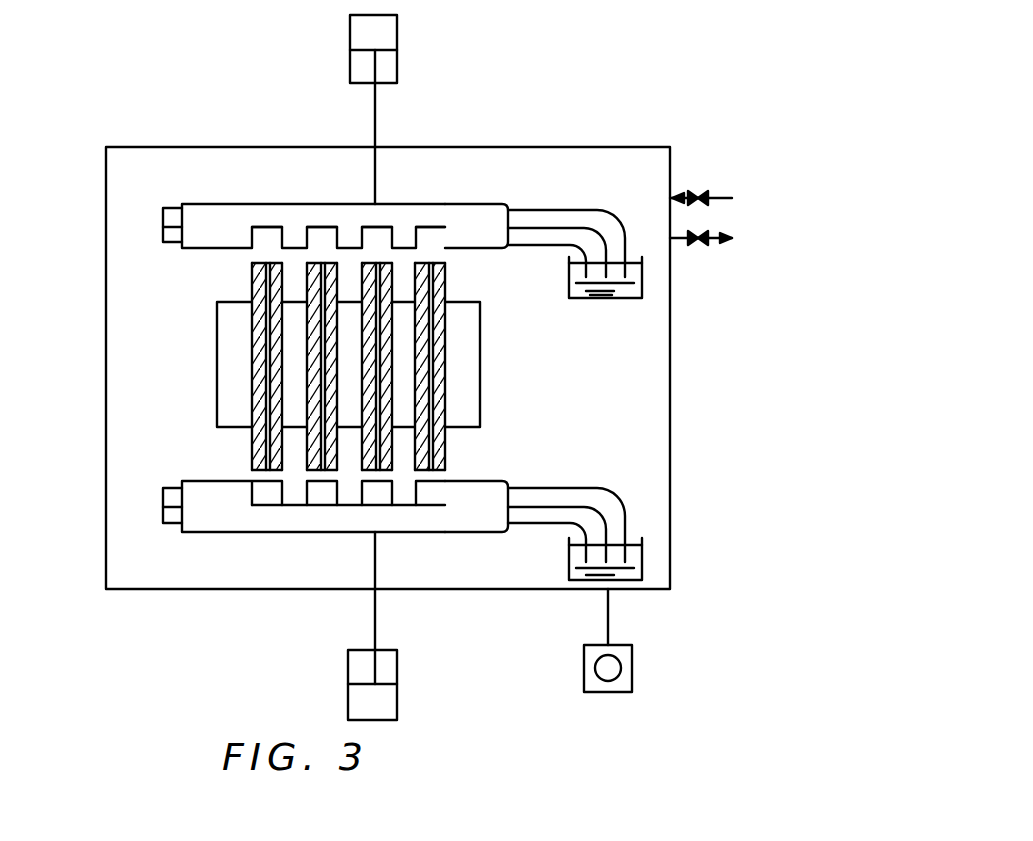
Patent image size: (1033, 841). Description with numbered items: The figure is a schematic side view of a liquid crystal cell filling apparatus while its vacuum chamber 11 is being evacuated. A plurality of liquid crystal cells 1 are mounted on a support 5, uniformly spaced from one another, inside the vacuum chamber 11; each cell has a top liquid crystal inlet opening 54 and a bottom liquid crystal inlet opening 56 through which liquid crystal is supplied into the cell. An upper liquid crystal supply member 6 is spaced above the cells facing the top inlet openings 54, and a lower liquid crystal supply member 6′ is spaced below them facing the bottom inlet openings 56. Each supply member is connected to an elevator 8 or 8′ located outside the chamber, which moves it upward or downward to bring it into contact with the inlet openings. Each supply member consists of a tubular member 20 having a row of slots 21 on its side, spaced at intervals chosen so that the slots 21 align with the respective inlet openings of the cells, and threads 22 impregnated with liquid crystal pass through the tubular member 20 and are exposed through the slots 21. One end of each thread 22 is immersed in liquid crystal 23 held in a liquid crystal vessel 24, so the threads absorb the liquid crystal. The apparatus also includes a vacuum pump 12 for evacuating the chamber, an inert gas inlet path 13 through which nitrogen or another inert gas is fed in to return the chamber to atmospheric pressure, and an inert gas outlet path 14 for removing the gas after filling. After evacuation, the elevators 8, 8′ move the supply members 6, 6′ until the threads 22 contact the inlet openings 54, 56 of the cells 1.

The liquid crystal cell 1 is at (252, 283).
The support 5 is at (481, 393).
The upper liquid crystal supply member 6 is at (208, 200).
The lower liquid crystal supply member 6′ is at (198, 536).
The elevator 8 is at (397, 42).
The elevator 8′ is at (348, 690).
The vacuum chamber 11 is at (590, 146).
The vacuum pump 12 is at (633, 671).
The inert gas inlet path 13 is at (714, 196).
The inert gas outlet path 14 is at (714, 246).
The tubular member 20 is at (478, 225).
The slots 21 is at (268, 228).
The threads 22 is at (548, 218).
The liquid crystal 23 is at (642, 273).
The liquid crystal vessel 24 is at (623, 299).
The top liquid crystal inlet opening 54 is at (263, 263).
The bottom liquid crystal inlet opening 56 is at (262, 472).